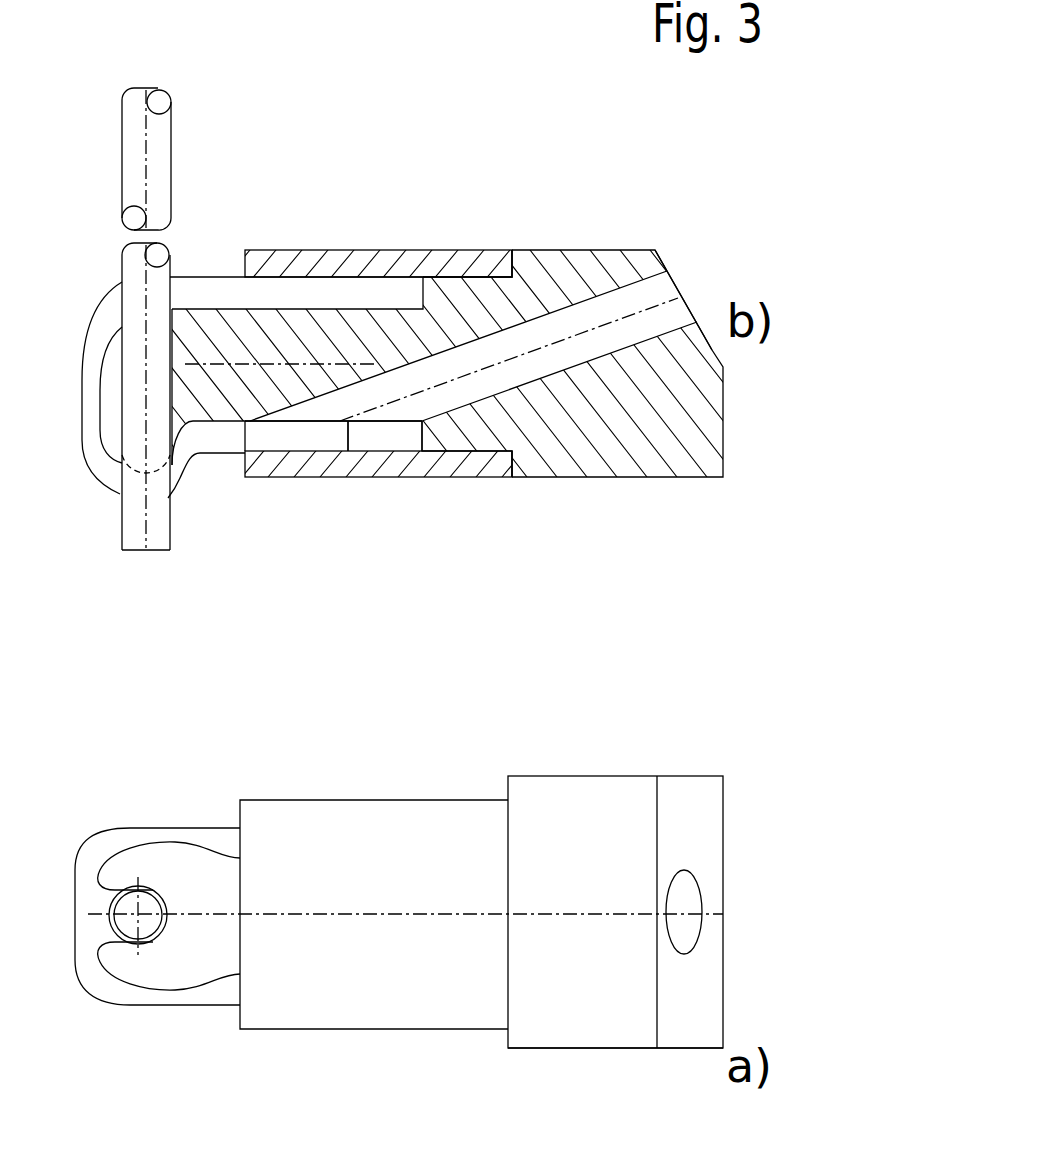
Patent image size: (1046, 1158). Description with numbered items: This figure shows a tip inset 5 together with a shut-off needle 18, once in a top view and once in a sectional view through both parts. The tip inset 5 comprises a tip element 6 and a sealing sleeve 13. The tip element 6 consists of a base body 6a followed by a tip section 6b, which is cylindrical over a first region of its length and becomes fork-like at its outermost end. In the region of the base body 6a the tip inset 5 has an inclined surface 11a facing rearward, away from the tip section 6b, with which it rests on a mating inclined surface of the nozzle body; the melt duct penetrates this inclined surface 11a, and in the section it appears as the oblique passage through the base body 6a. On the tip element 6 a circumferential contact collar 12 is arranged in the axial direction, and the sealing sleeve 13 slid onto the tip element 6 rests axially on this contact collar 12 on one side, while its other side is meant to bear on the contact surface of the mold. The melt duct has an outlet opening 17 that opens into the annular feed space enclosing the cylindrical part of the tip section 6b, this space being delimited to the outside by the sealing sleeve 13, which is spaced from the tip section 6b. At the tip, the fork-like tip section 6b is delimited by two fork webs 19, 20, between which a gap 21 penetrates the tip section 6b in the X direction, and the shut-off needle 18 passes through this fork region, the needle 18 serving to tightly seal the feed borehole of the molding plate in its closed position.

The tip inset 5 is at (475, 482).
The tip element 6 is at (682, 1048).
The base body 6a is at (647, 438).
The tip section 6b is at (207, 393).
The inclined surface 11a is at (667, 255).
The contact collar 12 is at (505, 260).
The sealing sleeve 13 is at (357, 265).
The outlet opening 17 is at (345, 480).
The shut-off needle 18 is at (135, 513).
The fork web 19 is at (148, 865).
The fork web 20 is at (130, 970).
The gap 21 is at (177, 307).